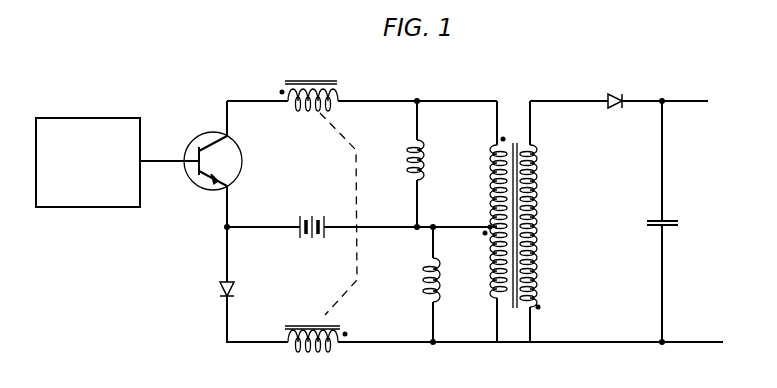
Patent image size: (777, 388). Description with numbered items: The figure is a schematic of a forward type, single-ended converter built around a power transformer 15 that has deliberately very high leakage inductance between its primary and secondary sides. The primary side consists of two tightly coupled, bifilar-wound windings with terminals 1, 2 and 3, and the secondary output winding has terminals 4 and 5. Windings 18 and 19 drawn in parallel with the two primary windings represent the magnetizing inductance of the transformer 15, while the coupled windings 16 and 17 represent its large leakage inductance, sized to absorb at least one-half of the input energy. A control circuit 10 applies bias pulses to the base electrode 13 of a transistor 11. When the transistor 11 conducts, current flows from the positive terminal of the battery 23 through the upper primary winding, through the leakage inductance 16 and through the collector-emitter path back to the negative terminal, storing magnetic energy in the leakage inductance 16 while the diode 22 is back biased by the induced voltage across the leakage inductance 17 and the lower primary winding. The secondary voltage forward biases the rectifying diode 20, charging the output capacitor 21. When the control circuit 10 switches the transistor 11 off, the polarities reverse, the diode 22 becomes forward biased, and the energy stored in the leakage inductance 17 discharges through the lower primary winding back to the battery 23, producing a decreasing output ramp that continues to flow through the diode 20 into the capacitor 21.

The control circuit 10 is at (84, 197).
The transistor 11 is at (219, 161).
The base electrode 13 is at (157, 157).
The transformer 15 is at (521, 114).
The leakage inductance 16 is at (309, 84).
The leakage inductance 17 is at (316, 327).
The magnetizing inductance winding 18 is at (429, 160).
The magnetizing inductance winding 19 is at (423, 280).
The rectifying diode 20 is at (615, 89).
The capacitor 21 is at (673, 225).
The diode 22 is at (216, 291).
The battery 23 is at (312, 216).
The primary winding terminal 1 is at (494, 136).
The primary winding junction terminal 2 is at (483, 220).
The primary winding terminal 3 is at (487, 320).
The secondary winding terminal 4 is at (543, 319).
The secondary winding terminal 5 is at (538, 123).